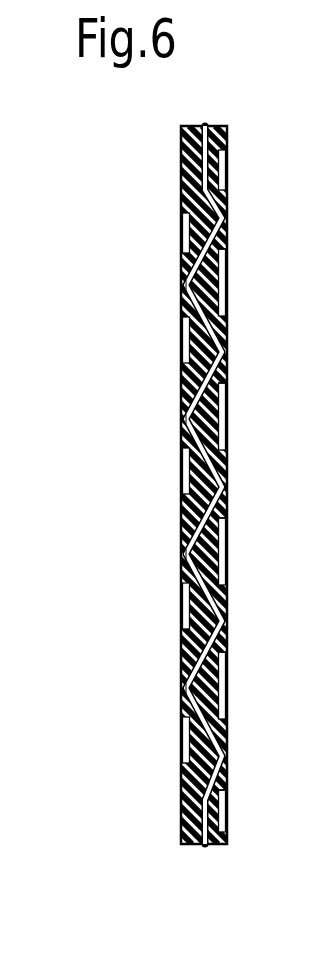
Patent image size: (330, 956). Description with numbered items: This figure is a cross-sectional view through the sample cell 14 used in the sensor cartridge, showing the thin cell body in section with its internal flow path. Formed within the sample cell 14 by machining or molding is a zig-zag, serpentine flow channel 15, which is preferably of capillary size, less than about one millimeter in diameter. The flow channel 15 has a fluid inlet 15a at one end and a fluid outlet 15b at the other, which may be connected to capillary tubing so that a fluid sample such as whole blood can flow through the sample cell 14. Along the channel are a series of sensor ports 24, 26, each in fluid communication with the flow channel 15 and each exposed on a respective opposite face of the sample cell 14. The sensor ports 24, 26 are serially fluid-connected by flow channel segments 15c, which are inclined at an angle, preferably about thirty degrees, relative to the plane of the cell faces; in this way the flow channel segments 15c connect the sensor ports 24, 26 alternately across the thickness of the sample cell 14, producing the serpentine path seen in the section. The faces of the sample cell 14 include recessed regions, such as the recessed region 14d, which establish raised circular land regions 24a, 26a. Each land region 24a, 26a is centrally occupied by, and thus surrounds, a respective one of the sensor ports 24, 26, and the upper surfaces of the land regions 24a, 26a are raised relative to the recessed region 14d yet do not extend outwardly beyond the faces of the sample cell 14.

The sample cell 14 is at (165, 474).
The recessed region 14d is at (180, 230).
The flow channel 15 is at (196, 489).
The fluid inlet 15a is at (203, 847).
The fluid outlet 15b is at (205, 125).
The flow channel segments 15c is at (180, 272).
The sensor port 24 is at (232, 215).
The land region 24a is at (230, 248).
The sensor port 26 is at (182, 288).
The land region 26a is at (178, 316).